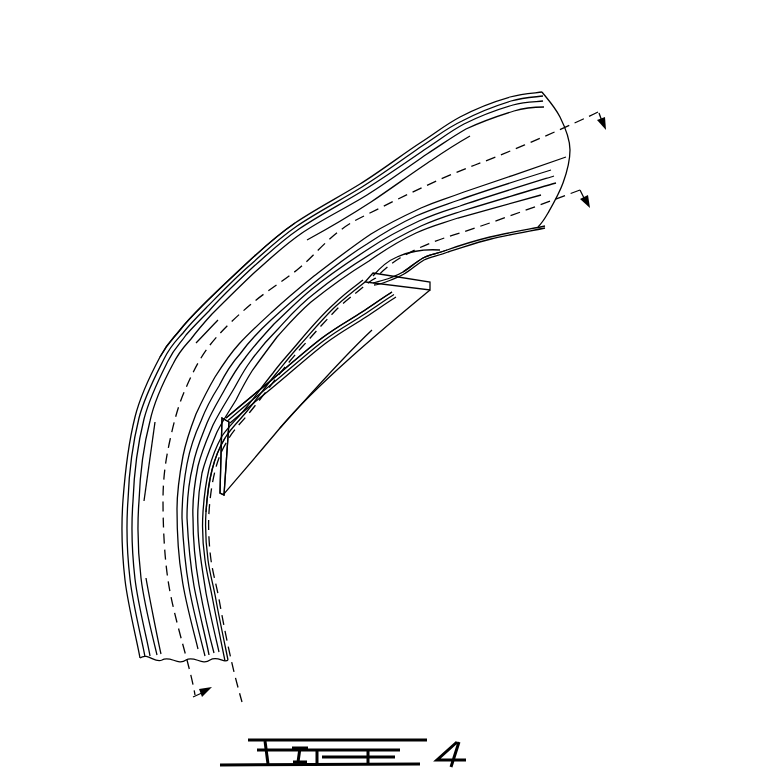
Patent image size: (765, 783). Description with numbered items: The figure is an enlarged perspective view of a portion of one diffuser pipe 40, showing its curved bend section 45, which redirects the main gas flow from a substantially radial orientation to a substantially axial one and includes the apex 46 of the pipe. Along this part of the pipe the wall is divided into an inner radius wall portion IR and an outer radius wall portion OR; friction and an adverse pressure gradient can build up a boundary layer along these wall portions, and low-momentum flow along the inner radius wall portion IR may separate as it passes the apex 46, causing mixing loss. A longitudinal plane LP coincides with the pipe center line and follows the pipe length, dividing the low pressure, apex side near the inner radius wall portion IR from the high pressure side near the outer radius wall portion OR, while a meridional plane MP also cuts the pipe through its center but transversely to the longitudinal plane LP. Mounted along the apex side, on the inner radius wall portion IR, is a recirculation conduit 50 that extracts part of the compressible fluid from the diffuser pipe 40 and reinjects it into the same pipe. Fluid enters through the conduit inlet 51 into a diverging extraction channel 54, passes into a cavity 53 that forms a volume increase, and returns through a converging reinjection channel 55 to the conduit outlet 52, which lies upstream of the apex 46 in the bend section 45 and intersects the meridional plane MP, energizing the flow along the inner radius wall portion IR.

The diffuser pipe 40 is at (250, 126).
The bend section 45 is at (244, 254).
The outer radius wall portion OR is at (199, 299).
The longitudinal plane LP is at (598, 112).
The meridional plane MP is at (578, 188).
The recirculation conduit 50 is at (332, 393).
The conduit inlet 51 is at (440, 250).
The inner radius wall portion IR is at (433, 264).
The extraction channel 54 is at (405, 292).
The cavity 53 is at (338, 349).
The apex 46 is at (240, 410).
The conduit outlet 52 is at (225, 417).
The reinjection channel 55 is at (210, 477).